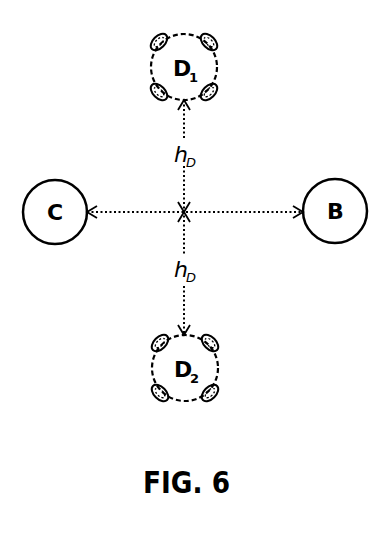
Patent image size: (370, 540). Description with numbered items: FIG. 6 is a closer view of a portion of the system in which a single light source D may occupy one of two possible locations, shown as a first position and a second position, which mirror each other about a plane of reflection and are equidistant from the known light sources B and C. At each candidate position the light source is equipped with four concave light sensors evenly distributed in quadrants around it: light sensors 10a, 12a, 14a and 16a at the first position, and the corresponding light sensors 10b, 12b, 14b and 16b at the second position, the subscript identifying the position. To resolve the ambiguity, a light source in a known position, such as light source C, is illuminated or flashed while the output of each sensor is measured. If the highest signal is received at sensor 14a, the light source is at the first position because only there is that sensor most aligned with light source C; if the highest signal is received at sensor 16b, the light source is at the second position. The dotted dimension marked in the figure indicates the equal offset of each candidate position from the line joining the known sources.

The light sensor 10a is at (217, 43).
The light sensor 12a is at (216, 96).
The light sensor 14a is at (152, 92).
The light sensor 16a is at (151, 42).
The light sensor 10b is at (218, 344).
The light sensor 12b is at (217, 397).
The light sensor 14b is at (153, 393).
The light sensor 16b is at (152, 344).